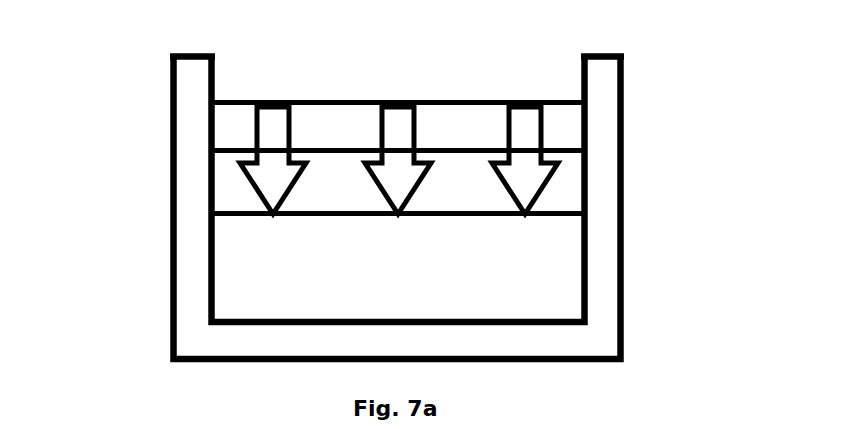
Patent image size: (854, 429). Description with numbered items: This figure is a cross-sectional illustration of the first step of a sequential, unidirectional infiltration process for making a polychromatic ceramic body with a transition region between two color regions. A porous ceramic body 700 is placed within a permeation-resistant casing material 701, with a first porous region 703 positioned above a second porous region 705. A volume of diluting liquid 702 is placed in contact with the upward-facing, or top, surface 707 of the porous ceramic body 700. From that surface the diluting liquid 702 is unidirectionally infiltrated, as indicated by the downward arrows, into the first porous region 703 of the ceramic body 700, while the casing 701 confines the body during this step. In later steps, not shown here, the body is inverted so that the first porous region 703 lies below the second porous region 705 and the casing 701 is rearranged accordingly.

The porous ceramic body 700 is at (243, 263).
The permeation-resistant casing material 701 is at (187, 207).
The diluting liquid 702 is at (242, 132).
The first porous region 703 is at (572, 188).
The second porous region 705 is at (542, 282).
The upward-facing surface 707 is at (227, 149).